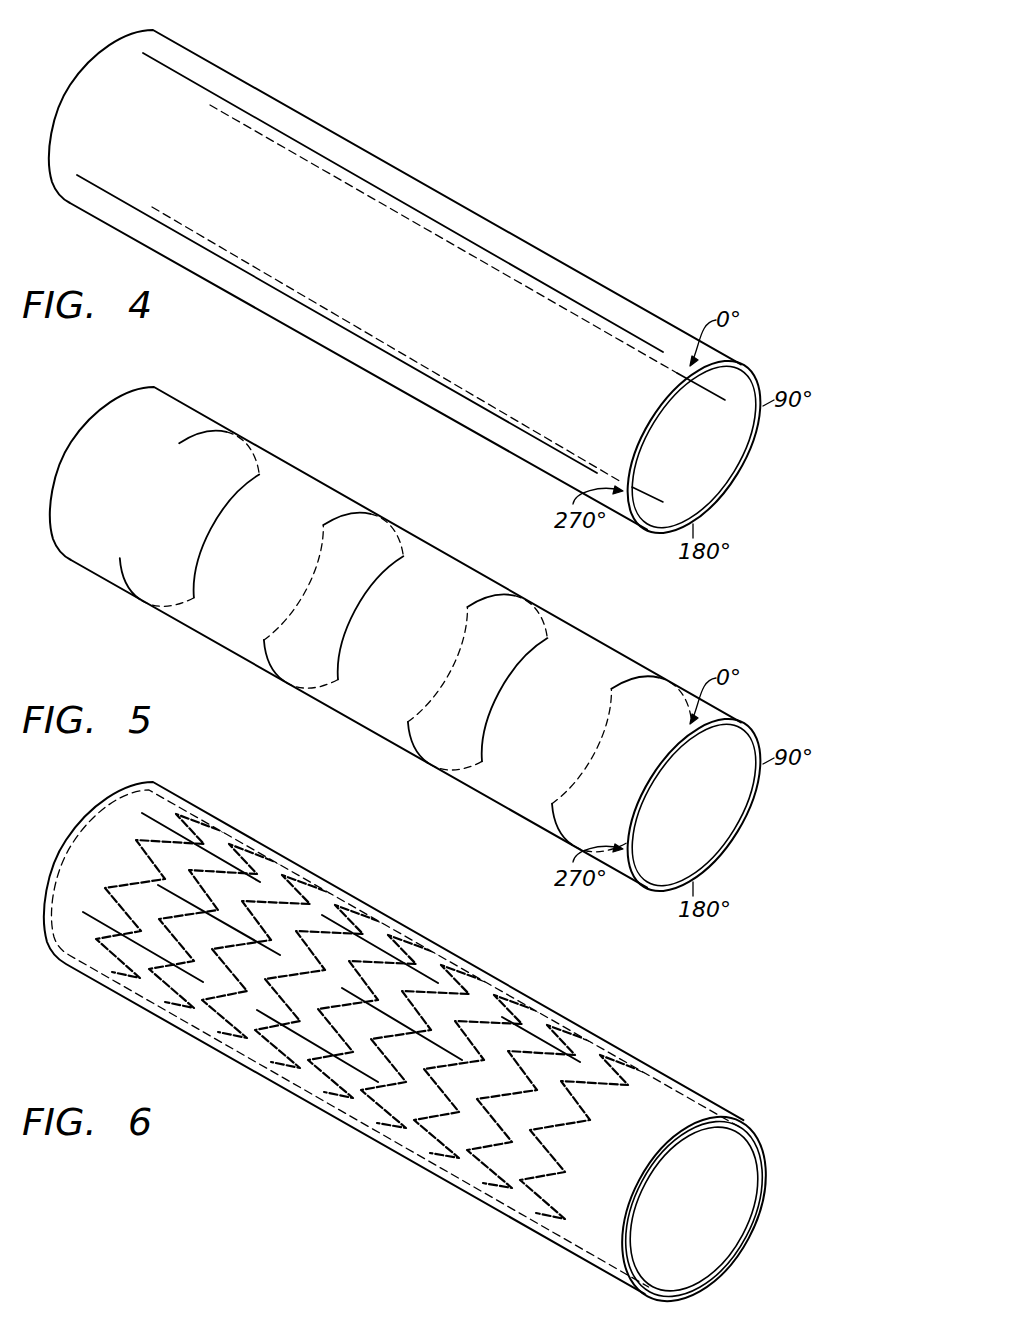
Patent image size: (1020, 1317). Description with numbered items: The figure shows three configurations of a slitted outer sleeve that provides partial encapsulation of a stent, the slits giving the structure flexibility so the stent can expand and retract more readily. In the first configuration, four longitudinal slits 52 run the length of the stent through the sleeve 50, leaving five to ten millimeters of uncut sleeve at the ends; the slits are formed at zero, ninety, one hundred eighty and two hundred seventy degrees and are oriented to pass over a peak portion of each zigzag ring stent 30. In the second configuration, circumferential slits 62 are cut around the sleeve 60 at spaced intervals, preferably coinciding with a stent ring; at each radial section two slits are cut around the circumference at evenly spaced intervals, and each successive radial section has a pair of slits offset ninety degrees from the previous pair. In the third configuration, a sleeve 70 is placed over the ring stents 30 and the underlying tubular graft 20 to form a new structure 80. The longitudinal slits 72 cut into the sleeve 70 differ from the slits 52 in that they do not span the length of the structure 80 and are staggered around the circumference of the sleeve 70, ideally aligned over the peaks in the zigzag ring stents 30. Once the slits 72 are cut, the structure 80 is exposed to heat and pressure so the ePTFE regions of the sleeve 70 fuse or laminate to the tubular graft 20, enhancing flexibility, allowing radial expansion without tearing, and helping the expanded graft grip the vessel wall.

In FIG. 4, the sleeve 50 is at (473, 173).
In FIG. 4, the longitudinal slits 52 is at (233, 104).
In FIG. 5, the sleeve 60 is at (655, 634).
In FIG. 5, the circumferential slits 62 is at (396, 533).
In FIG. 6, the zigzag ring stent 30 is at (288, 903).
In FIG. 6, the sleeve 70 is at (480, 1012).
In FIG. 6, the longitudinal slits 72 is at (378, 947).
In FIG. 6, the structure 80 is at (669, 1069).
In FIG. 6, the tubular graft 20 is at (736, 1246).